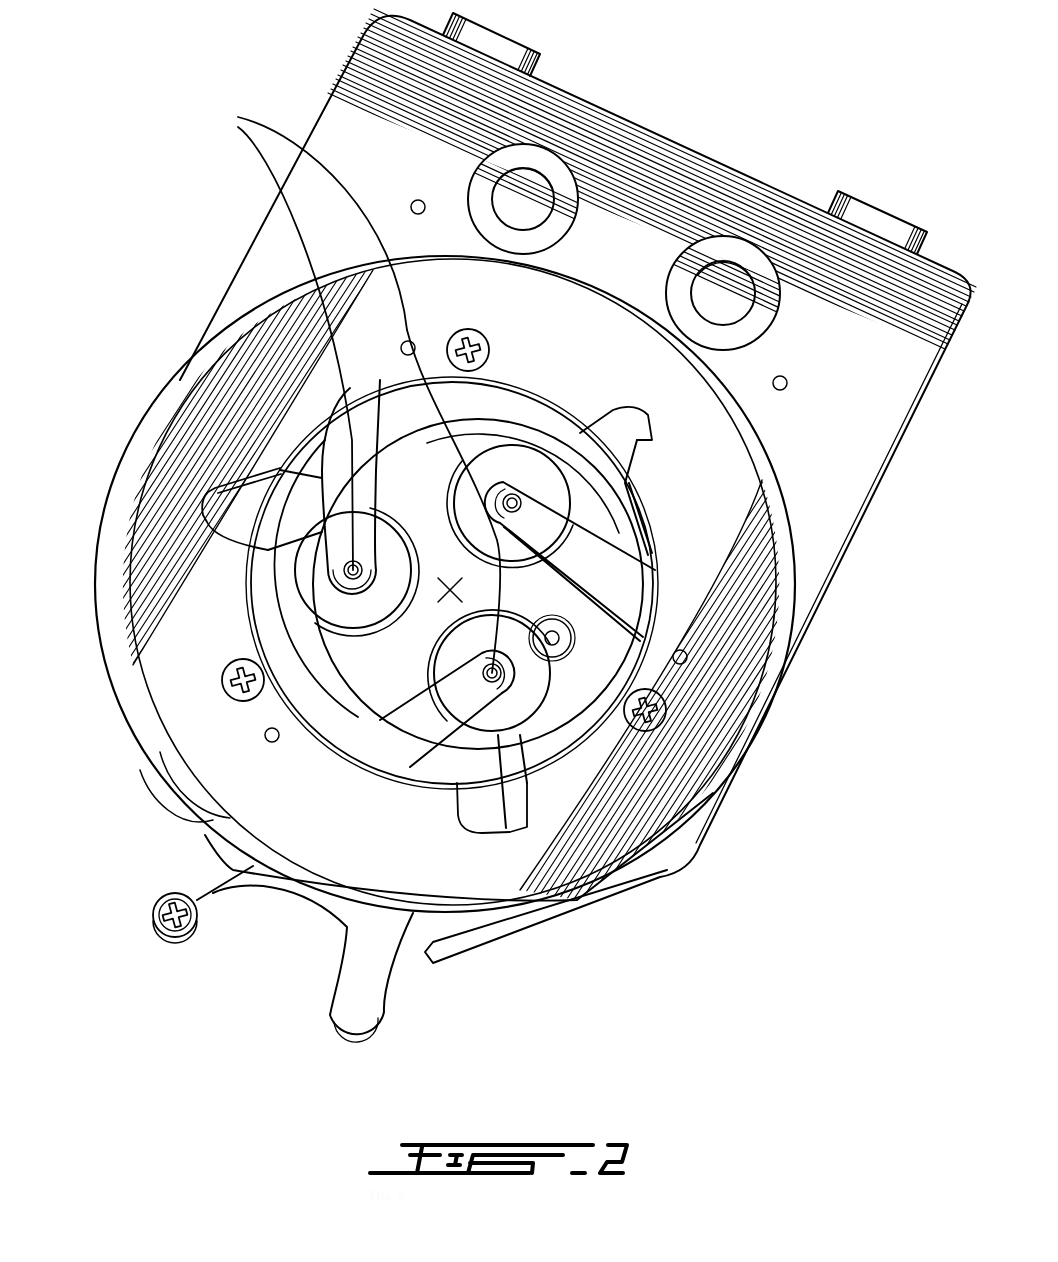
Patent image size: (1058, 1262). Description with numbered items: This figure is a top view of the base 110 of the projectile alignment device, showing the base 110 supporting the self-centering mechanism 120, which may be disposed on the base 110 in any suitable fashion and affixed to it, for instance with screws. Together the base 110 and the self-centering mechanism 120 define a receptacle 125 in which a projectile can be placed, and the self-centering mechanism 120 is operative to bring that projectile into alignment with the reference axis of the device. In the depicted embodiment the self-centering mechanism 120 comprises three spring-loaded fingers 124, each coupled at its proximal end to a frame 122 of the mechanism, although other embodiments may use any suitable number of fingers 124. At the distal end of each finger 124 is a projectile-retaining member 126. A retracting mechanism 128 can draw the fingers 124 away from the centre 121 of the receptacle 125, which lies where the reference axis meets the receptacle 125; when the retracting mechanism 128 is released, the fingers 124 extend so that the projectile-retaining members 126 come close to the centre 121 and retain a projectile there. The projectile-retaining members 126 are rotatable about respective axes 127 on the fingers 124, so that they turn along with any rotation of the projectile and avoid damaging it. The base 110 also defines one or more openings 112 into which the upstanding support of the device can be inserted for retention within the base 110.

The base 110 is at (888, 302).
The openings 112 is at (718, 283).
The self-centering mechanism 120 is at (125, 775).
The centre of the receptacle 121 is at (462, 590).
The frame 122 is at (650, 783).
The spring-loaded fingers 124 is at (343, 457).
The receptacle 125 is at (563, 738).
The projectile-retaining members 126 is at (310, 577).
The axes 127 is at (345, 393).
The retracting mechanism 128 is at (353, 1007).